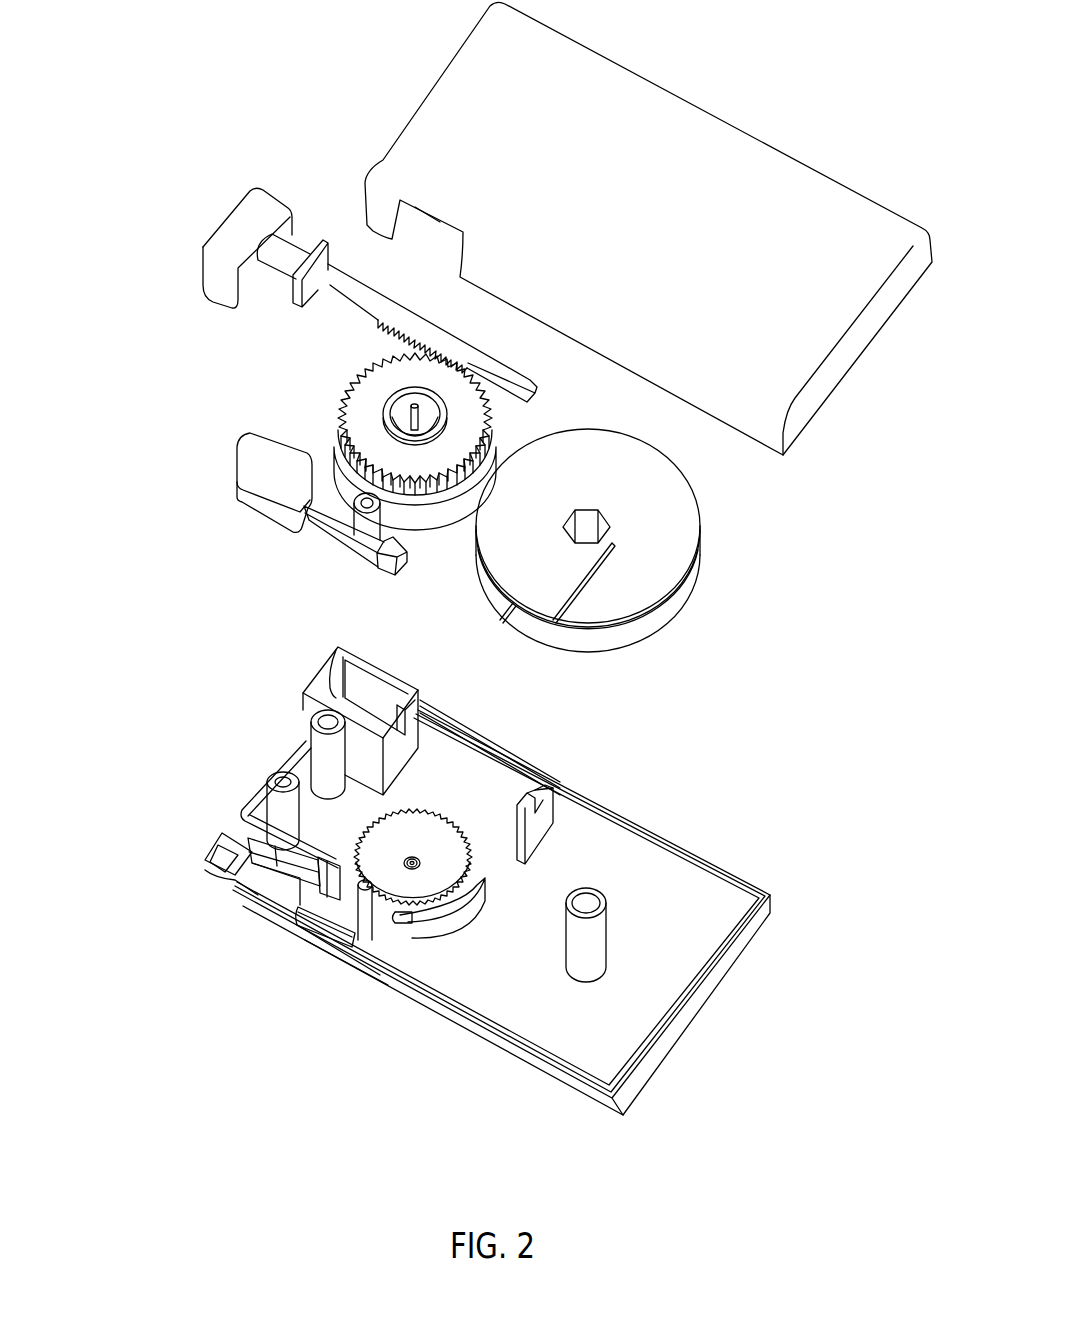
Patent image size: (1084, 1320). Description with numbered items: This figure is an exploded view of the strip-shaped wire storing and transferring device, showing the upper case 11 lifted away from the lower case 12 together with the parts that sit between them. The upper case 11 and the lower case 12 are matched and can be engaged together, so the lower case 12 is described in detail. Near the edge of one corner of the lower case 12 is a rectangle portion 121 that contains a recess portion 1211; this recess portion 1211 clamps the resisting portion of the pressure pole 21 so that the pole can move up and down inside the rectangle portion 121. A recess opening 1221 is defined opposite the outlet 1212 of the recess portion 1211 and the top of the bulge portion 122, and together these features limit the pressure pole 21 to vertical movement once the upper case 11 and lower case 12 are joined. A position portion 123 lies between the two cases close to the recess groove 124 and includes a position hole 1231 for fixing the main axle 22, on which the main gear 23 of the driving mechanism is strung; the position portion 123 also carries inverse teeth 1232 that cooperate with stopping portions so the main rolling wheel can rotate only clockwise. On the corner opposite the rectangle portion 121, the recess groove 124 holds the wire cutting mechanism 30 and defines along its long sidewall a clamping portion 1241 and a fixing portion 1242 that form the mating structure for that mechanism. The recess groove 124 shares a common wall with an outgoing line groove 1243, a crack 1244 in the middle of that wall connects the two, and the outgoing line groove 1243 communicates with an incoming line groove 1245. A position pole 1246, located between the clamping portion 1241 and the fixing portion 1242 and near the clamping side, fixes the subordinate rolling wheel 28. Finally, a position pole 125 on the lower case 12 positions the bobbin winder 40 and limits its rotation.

The upper case 11 is at (668, 213).
The lower case 12 is at (513, 1062).
The pressure pole 21 is at (217, 197).
The main axle 22 is at (413, 407).
The main gear 23 is at (357, 430).
The subordinate rolling wheel 28 is at (363, 520).
The wire cutting mechanism 30 is at (237, 462).
The bobbin winder 40 is at (660, 545).
The rectangle portion 121 is at (307, 688).
The recess portion 1211 is at (373, 693).
The outlet 1212 is at (402, 718).
The bulge portion 122 is at (540, 823).
The recess opening 1221 is at (553, 788).
The position portion 123 is at (443, 850).
The position hole 1231 is at (412, 853).
The inverse teeth 1232 is at (355, 838).
The recess groove 124 is at (262, 898).
The clamping portion 1241 is at (297, 903).
The fixing portion 1242 is at (388, 960).
The outgoing line groove 1243 is at (238, 838).
The crack 1244 is at (238, 895).
The incoming line groove 1245 is at (447, 942).
The position pole 1246 is at (362, 950).
The position pole 125 is at (585, 940).